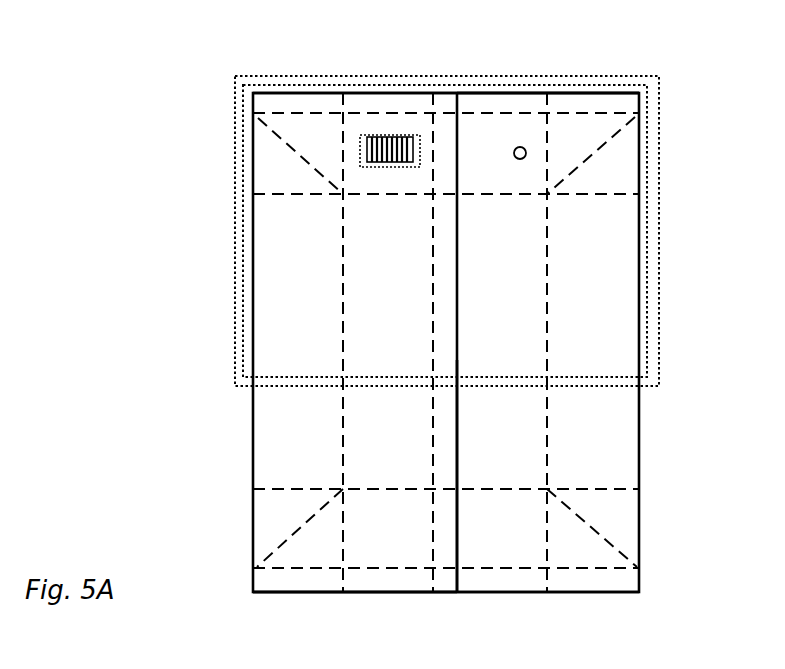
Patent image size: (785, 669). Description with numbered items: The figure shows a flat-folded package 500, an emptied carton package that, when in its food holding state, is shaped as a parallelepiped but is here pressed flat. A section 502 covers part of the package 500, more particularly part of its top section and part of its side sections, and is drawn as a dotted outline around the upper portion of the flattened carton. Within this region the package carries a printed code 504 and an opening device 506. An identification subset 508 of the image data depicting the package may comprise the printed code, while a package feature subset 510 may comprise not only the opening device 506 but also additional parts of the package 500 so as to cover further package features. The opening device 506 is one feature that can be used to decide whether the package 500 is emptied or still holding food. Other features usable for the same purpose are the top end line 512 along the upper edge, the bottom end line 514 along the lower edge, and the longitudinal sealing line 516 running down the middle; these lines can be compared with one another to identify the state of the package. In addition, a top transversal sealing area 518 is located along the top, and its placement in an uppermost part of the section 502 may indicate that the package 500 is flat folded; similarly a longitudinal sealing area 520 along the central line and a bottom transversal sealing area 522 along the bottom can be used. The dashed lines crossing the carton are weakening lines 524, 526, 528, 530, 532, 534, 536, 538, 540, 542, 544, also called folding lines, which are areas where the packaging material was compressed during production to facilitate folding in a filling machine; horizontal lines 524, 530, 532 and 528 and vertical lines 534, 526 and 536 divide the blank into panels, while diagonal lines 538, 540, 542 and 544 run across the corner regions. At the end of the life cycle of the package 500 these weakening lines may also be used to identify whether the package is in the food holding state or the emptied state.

The flat-folded package 500 is at (182, 146).
The section 502 is at (659, 232).
The printed code 504 is at (367, 137).
The opening device 506 is at (527, 153).
The identification subset 508 is at (387, 137).
The package feature subset 510 is at (648, 313).
The top end line 512 is at (502, 93).
The bottom end line 514 is at (497, 592).
The longitudinal sealing line 516 is at (458, 350).
The top transversal sealing area 518 is at (538, 102).
The longitudinal sealing area 520 is at (447, 360).
The bottom transversal sealing area 522 is at (390, 582).
The weakening line 524 is at (463, 113).
The weakening line 526 is at (433, 225).
The weakening line 528 is at (487, 568).
The weakening line 530 is at (598, 195).
The weakening line 532 is at (372, 489).
The weakening line 534 is at (343, 225).
The weakening line 536 is at (547, 225).
The weakening line 538 is at (282, 140).
The weakening line 540 is at (607, 139).
The weakening line 542 is at (285, 542).
The weakening line 544 is at (598, 530).